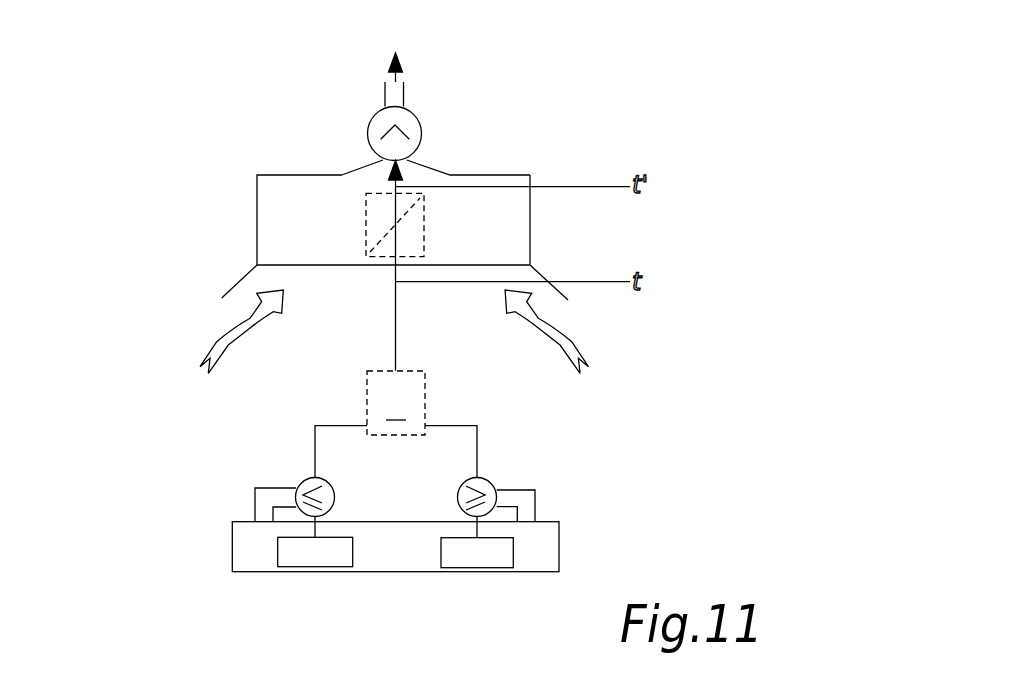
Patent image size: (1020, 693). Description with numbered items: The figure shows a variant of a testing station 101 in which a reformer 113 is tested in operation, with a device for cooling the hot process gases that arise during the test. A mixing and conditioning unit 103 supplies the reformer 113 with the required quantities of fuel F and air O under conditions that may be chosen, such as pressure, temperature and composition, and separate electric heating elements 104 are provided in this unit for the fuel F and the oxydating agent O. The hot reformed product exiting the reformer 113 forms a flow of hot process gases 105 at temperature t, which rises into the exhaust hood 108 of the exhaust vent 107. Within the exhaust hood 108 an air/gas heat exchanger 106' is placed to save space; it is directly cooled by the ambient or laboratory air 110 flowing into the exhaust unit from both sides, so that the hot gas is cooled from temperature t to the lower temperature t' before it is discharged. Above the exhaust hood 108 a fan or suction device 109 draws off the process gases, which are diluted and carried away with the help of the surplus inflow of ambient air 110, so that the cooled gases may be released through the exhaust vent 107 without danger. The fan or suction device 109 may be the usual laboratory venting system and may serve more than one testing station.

The fuel cell testing station 101 is at (212, 267).
The mixing and conditioning unit 103 is at (559, 542).
The electric heating elements 104 is at (301, 483).
The flow of hot process gases 105 is at (396, 351).
The air/gas heat exchanger 106' is at (510, 224).
The exhaust vent 107 is at (465, 150).
The exhaust hood 108 is at (530, 250).
The fan or suction device 109 is at (412, 110).
The ambient air 110 is at (217, 337).
The reformer 113 is at (367, 402).